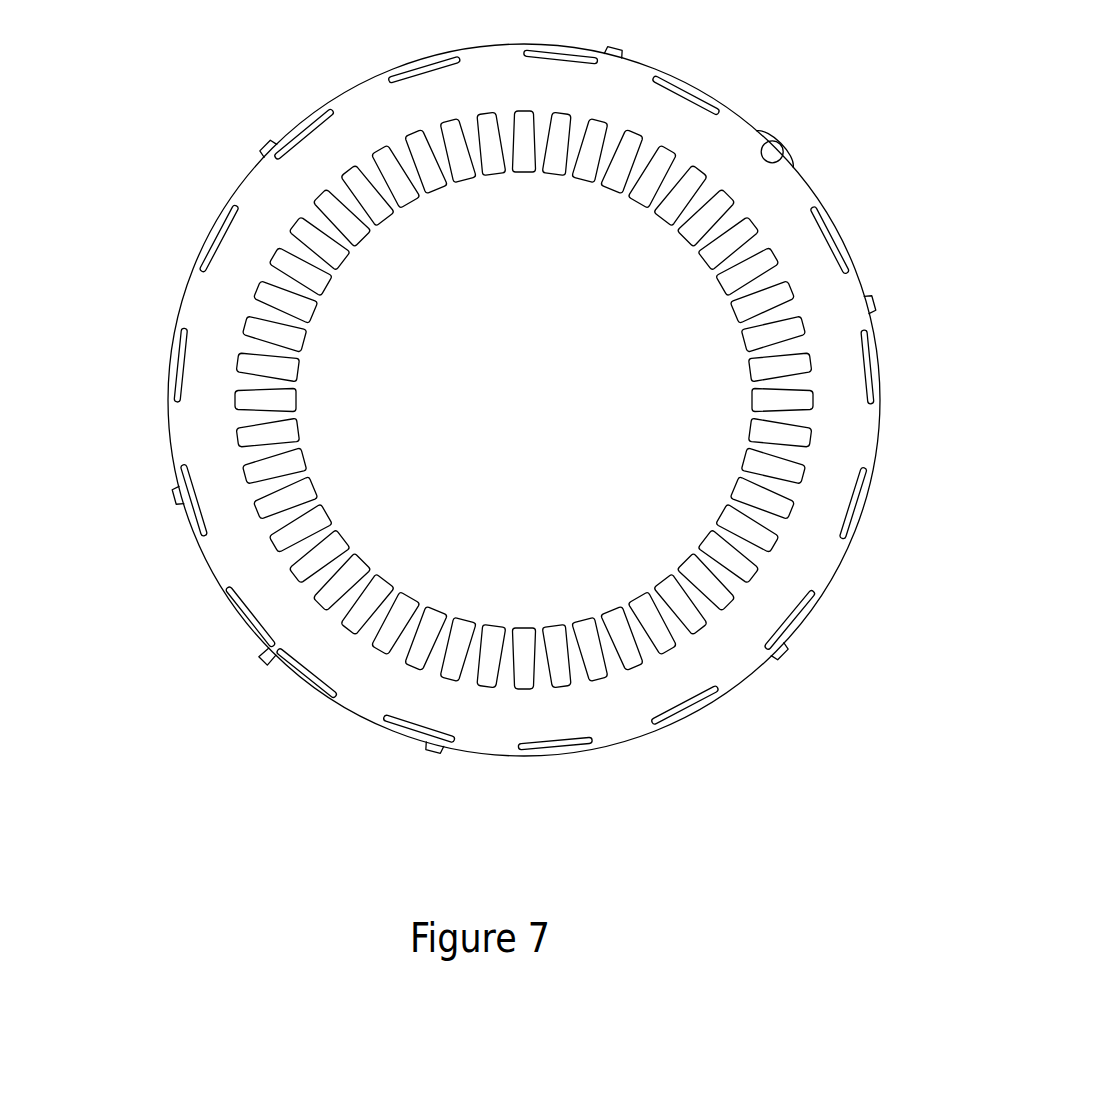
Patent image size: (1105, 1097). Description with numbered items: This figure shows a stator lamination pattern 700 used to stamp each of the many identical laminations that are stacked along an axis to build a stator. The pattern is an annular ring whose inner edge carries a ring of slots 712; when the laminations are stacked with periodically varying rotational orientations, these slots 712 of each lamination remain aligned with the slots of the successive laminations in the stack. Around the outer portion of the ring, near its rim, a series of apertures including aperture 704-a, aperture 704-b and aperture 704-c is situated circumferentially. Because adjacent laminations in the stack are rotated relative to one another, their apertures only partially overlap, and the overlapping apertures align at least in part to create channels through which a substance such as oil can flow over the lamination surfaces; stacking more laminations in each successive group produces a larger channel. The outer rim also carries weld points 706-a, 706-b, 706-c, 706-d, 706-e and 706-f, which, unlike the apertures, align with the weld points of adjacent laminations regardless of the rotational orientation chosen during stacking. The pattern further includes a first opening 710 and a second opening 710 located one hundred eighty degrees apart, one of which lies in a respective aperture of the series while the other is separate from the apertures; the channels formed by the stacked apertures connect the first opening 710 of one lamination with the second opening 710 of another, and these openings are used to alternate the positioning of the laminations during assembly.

The stator lamination pattern 700 is at (222, 75).
The aperture 704-a is at (688, 98).
The aperture 704-b is at (832, 243).
The aperture 704-c is at (870, 385).
The weld point 706-a is at (627, 55).
The weld point 706-b is at (878, 305).
The weld point 706-c is at (782, 658).
The weld point 706-d is at (437, 752).
The weld point 706-e is at (172, 500).
The weld point 706-f is at (265, 147).
The opening 710 is at (775, 152).
The slot 712 is at (315, 297).